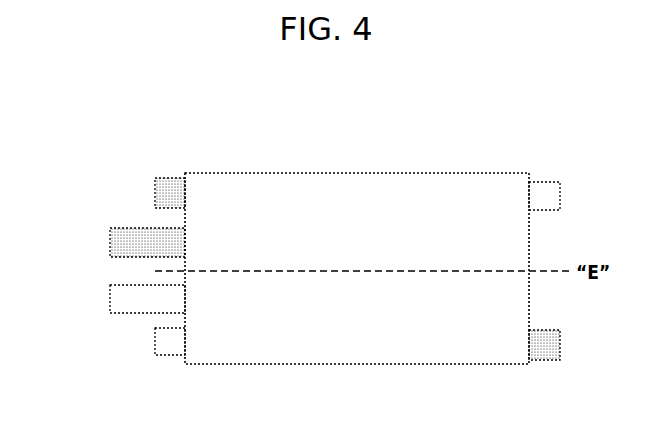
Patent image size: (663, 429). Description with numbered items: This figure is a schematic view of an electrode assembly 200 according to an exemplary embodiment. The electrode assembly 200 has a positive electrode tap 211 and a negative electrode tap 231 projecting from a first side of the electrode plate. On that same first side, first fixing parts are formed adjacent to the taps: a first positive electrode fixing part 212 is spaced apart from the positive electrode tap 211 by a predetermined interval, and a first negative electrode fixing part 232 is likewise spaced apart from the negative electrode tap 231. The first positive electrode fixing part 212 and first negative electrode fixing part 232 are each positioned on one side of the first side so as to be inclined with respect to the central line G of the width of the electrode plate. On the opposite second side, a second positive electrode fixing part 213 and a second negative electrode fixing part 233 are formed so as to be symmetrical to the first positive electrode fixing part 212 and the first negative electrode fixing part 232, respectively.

The electrode assembly 200 is at (66, 158).
The positive electrode tap 211 is at (122, 298).
The first positive electrode fixing part 212 is at (167, 340).
The second positive electrode fixing part 213 is at (548, 196).
The negative electrode tap 231 is at (122, 238).
The first negative electrode fixing part 232 is at (166, 193).
The second negative electrode fixing part 233 is at (548, 343).